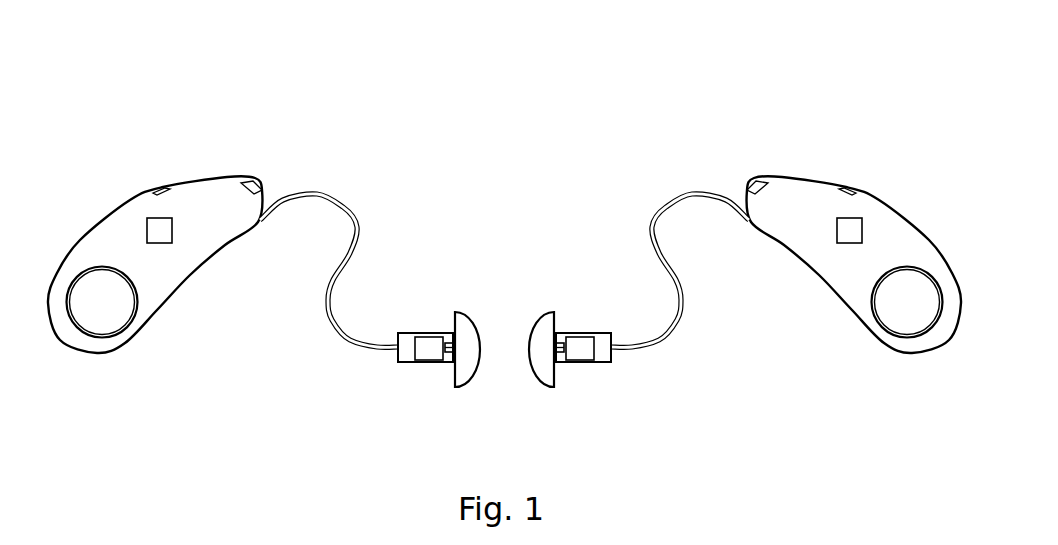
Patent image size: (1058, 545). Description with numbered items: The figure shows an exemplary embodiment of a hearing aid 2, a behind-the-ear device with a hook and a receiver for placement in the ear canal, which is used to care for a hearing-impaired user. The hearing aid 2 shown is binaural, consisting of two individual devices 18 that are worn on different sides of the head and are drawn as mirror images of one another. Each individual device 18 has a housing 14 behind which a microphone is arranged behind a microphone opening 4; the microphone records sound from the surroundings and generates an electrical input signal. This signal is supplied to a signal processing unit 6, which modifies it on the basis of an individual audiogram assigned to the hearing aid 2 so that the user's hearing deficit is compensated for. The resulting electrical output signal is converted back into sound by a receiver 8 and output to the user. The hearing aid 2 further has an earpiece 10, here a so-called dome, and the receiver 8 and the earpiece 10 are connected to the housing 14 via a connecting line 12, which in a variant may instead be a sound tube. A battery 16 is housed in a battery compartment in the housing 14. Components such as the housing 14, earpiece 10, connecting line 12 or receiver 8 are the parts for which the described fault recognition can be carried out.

The hearing aid 2 is at (82, 89).
The microphone opening 4 is at (503, 145).
The signal processing unit 6 is at (503, 191).
The receiver 8 is at (503, 395).
The earpiece 10 is at (493, 339).
The connecting line 12 is at (504, 311).
The housing 14 is at (504, 224).
The battery 16 is at (505, 314).
The individual device 18 is at (504, 279).